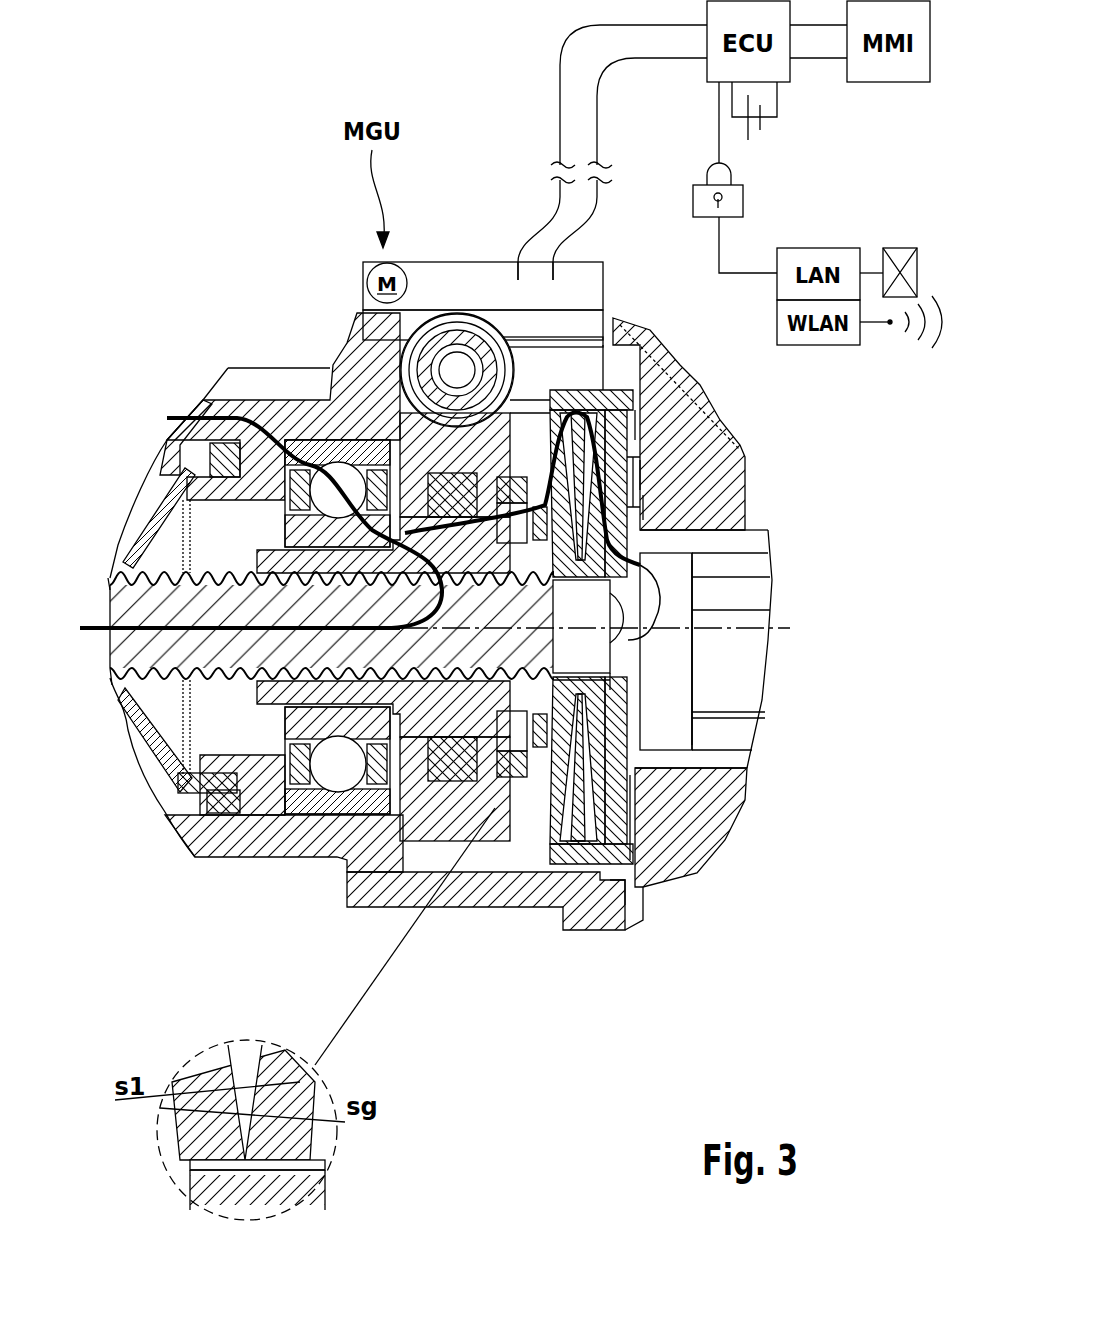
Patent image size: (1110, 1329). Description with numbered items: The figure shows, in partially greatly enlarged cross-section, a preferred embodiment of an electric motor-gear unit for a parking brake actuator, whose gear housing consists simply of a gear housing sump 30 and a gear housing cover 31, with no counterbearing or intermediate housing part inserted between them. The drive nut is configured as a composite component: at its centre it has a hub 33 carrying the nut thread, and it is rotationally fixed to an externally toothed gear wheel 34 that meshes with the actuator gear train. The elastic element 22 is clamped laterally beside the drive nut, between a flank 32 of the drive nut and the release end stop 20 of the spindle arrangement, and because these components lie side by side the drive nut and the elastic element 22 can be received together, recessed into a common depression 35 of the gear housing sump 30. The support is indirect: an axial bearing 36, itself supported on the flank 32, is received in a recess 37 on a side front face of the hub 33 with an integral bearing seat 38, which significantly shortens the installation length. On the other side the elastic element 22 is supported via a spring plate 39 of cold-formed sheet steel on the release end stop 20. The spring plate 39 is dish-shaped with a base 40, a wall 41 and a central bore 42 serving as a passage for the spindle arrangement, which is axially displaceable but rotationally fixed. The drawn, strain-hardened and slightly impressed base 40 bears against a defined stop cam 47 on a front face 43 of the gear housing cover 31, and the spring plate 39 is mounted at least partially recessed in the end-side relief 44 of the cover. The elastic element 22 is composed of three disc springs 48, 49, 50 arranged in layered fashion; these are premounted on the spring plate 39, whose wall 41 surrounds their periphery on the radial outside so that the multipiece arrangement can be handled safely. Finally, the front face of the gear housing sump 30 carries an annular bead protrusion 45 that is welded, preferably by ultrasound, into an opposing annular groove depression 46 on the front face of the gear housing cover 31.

The release end stop 20 is at (670, 668).
The elastic element 22 is at (612, 377).
The gear housing sump 30 is at (325, 835).
The gear housing cover 31 is at (677, 843).
The flank 32 is at (520, 790).
The hub 33 is at (660, 627).
The gear wheel 34 is at (497, 790).
The depression 35 is at (440, 855).
The axial bearing 36 is at (515, 738).
The recess 37 is at (507, 790).
The bearing seat 38 is at (600, 705).
The spring plate 39 is at (640, 470).
The base 40 is at (635, 440).
The wall 41 is at (565, 385).
The central bore 42 is at (650, 592).
The front face 43 is at (580, 340).
The relief 44 is at (635, 815).
The annular bead protrusion 45 is at (628, 935).
The annular groove depression 46 is at (625, 905).
The stop cam 47 is at (635, 780).
The disc spring 48 is at (640, 480).
The disc spring 49 is at (643, 510).
The disc spring 50 is at (655, 535).